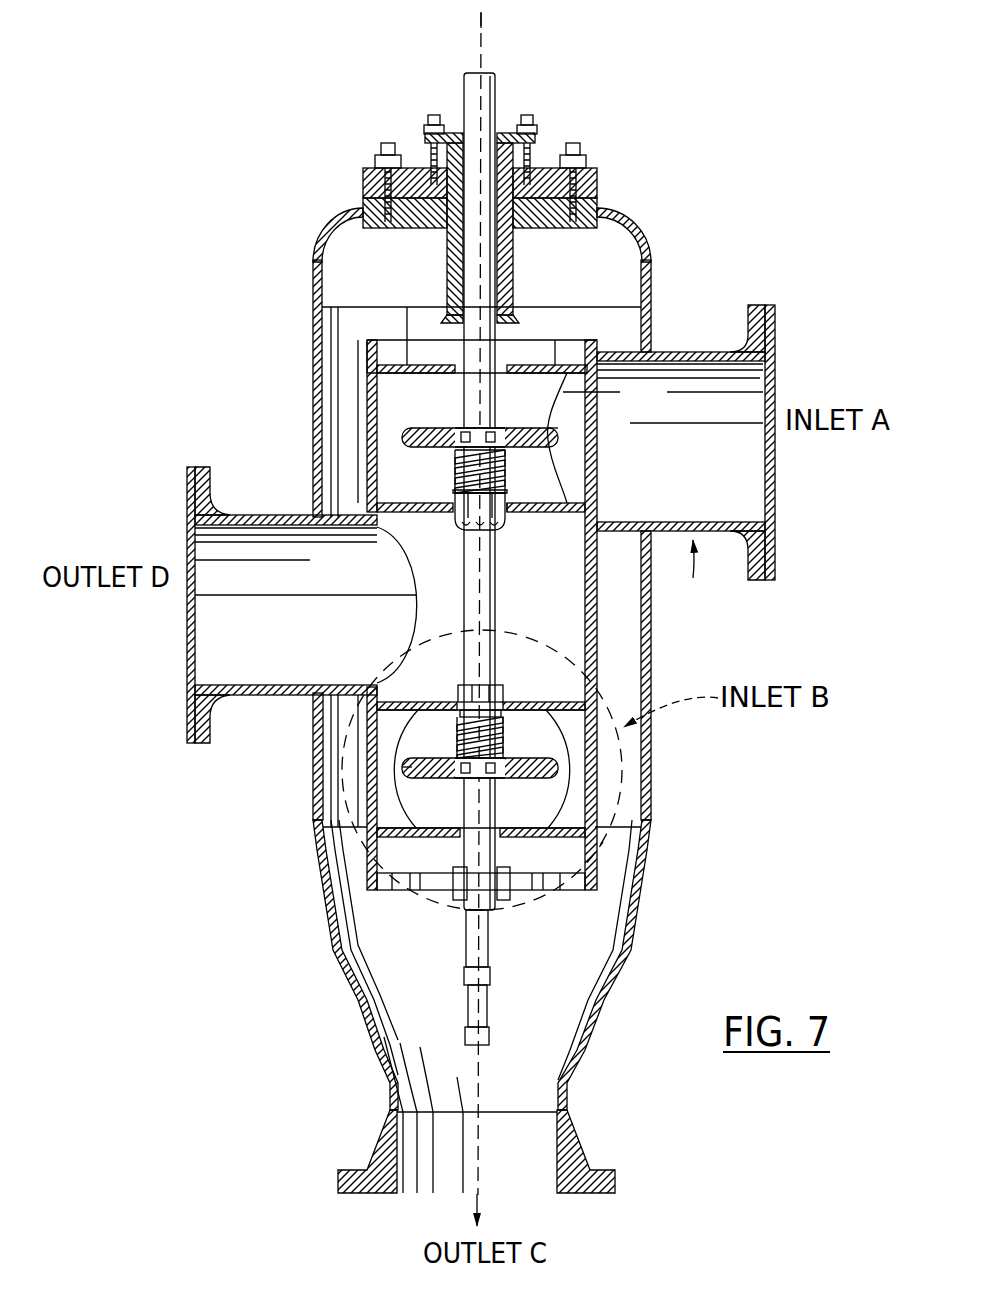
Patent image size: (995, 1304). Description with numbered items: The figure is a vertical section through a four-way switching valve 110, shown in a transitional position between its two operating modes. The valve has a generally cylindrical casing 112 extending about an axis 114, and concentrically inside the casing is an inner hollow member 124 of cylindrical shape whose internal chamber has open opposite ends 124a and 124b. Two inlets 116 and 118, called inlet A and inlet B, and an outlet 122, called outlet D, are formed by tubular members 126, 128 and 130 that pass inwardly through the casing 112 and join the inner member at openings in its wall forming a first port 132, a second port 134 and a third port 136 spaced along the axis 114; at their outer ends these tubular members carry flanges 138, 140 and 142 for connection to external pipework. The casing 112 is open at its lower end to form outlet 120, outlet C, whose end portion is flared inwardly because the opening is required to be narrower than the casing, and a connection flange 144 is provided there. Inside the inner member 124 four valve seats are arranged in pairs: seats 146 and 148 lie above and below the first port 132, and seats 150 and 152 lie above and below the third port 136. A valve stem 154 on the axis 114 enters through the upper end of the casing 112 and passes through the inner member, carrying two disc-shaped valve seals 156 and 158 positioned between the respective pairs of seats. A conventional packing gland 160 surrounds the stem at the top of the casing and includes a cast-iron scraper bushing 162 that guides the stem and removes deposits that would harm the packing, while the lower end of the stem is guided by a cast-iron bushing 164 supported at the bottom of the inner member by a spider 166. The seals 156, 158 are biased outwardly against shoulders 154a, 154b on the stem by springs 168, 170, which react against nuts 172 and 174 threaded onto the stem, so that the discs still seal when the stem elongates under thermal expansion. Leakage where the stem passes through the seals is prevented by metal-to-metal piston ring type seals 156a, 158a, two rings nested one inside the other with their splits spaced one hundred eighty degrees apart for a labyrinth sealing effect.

The valve 110 is at (527, 680).
The casing 112 is at (661, 307).
The axis 114 is at (487, 20).
The inlet 116 is at (697, 577).
The inlet 118 is at (565, 800).
The outlet 120 is at (383, 1087).
The outlet 122 is at (187, 645).
The inner hollow member 124 is at (600, 652).
The open end 124a is at (395, 345).
The open end 124b is at (382, 893).
The tubular member 126 is at (766, 373).
The tubular member 128 is at (377, 803).
The tubular member 130 is at (257, 514).
The first port 132 is at (549, 478).
The second port 134 is at (400, 563).
The third port 136 is at (548, 749).
The flange 138 is at (766, 313).
The flange 140 is at (603, 842).
The flange 142 is at (195, 746).
The connection flange 144 is at (342, 1182).
The valve seat 146 is at (563, 373).
The valve seat 148 is at (567, 508).
The valve seat 150 is at (557, 703).
The valve seat 152 is at (563, 891).
The valve stem 154 is at (494, 108).
The shoulder 154a is at (416, 428).
The shoulder 154b is at (504, 779).
The valve seal 156 is at (577, 430).
The piston ring type seal 156a is at (450, 458).
The valve seal 158 is at (432, 798).
The piston ring type seal 158a is at (442, 765).
The packing gland 160 is at (619, 153).
The scraper bushing 162 is at (513, 267).
The bushing 164 is at (463, 913).
The spider 166 is at (517, 896).
The spring 168 is at (456, 493).
The spring 170 is at (457, 735).
The nut 172 is at (467, 525).
The nut 174 is at (459, 689).